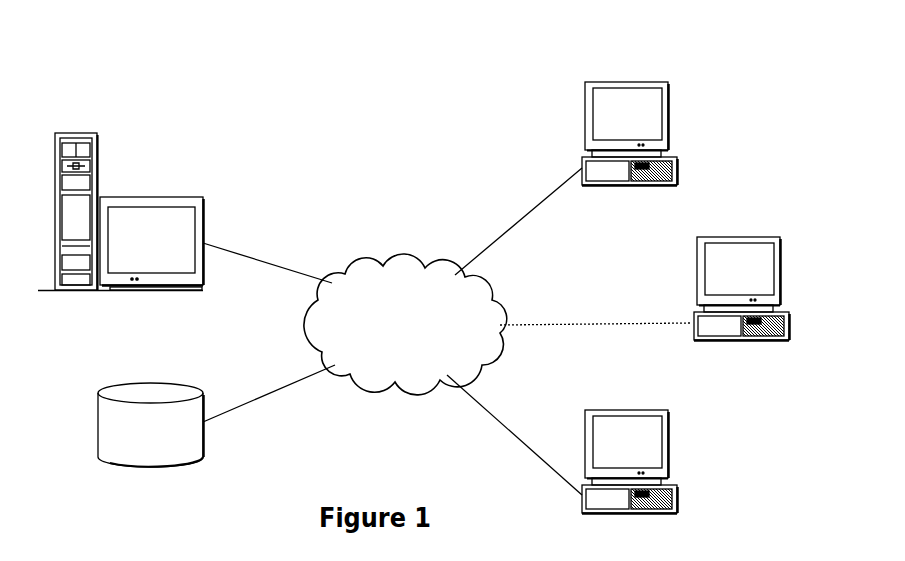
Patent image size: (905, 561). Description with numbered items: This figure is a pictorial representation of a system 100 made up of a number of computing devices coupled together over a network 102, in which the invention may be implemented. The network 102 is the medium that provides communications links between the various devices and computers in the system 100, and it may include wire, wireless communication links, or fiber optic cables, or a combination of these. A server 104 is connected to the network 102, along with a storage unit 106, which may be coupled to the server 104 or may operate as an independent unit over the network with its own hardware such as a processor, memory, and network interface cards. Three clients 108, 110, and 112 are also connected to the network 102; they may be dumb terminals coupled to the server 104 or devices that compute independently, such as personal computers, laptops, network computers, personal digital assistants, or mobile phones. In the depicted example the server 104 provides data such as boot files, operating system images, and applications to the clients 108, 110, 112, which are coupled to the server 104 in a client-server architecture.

The system 100 is at (290, 122).
The network 102 is at (427, 349).
The server 104 is at (98, 153).
The storage unit 106 is at (98, 427).
The client 108 is at (675, 123).
The client 110 is at (780, 275).
The client 112 is at (673, 453).